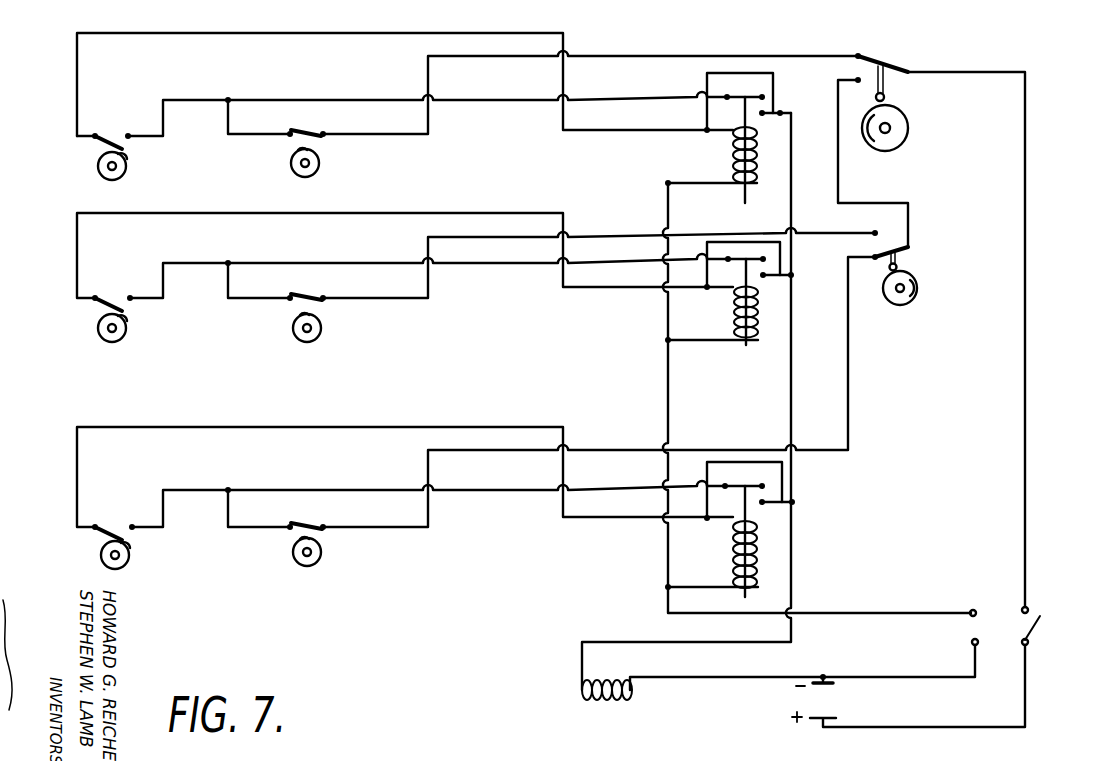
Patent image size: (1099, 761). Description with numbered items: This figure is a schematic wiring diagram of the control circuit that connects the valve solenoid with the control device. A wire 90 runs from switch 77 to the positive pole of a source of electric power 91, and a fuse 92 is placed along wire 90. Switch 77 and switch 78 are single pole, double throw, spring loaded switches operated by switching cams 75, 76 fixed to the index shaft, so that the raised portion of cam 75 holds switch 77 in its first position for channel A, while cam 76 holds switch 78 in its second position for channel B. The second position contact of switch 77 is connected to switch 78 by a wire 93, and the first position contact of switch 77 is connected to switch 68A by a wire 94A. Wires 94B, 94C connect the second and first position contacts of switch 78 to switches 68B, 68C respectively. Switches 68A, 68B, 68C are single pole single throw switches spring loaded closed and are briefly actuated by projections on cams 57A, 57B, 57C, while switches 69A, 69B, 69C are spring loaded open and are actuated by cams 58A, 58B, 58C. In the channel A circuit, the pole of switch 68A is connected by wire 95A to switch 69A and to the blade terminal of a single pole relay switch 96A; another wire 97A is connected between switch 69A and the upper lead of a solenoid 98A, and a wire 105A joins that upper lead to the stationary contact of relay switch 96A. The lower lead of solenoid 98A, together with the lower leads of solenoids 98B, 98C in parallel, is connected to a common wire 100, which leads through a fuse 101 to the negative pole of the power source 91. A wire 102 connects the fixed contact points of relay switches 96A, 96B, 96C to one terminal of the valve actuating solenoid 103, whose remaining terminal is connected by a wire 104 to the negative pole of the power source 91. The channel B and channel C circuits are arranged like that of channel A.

The wire 97A is at (77, 45).
The wire 95A is at (243, 99).
The switch 69A is at (90, 118).
The switch 68A is at (313, 132).
The cam 58A is at (128, 172).
The cam 57A is at (320, 168).
The wire 94A is at (742, 56).
The wire 105A is at (742, 73).
The relay switch 96A is at (762, 97).
The solenoid 98A is at (733, 160).
The switch 77 is at (870, 60).
The switching cam 75 is at (908, 130).
The wire 93 is at (870, 203).
The switch 78 is at (907, 253).
The switching cam 76 is at (917, 290).
The wire 90 is at (1027, 333).
The switch 69B is at (104, 303).
The switch 68B is at (316, 297).
The cam 58B is at (112, 343).
The cam 57B is at (307, 343).
The wire 94B is at (671, 232).
The relay switch 96B is at (763, 259).
The solenoid 98B is at (733, 323).
The switch 69C is at (152, 508).
The switch 68C is at (316, 517).
The cam 58C is at (115, 570).
The cam 57C is at (307, 567).
The wire 94C is at (689, 448).
The relay switch 96C is at (762, 486).
The solenoid 98C is at (733, 556).
The wire 102 is at (792, 508).
The common wire 100 is at (877, 612).
The fuse 101 is at (970, 642).
The valve actuating solenoid 103 is at (584, 702).
The wire 104 is at (680, 678).
The source of electric power 91 is at (862, 701).
The fuse 92 is at (1040, 616).